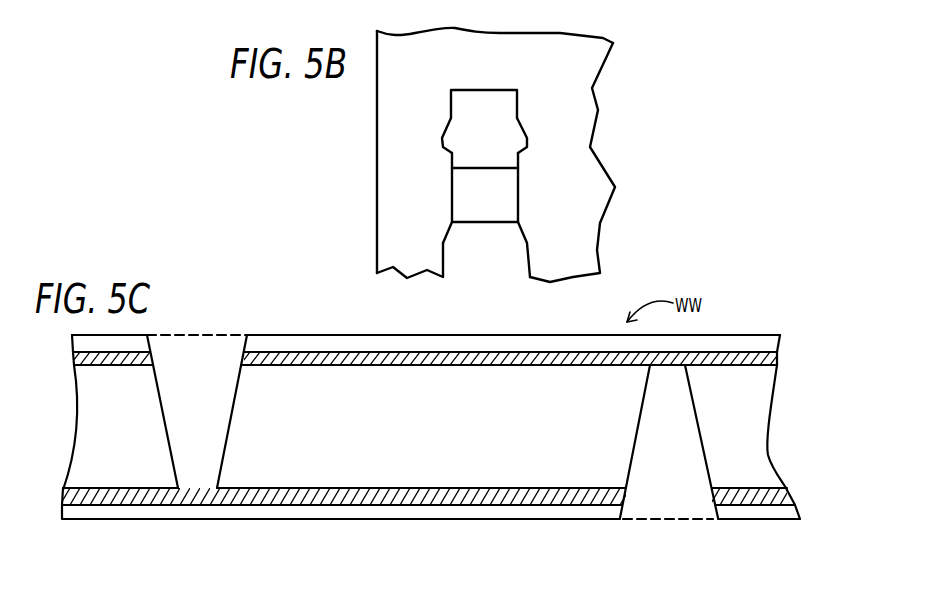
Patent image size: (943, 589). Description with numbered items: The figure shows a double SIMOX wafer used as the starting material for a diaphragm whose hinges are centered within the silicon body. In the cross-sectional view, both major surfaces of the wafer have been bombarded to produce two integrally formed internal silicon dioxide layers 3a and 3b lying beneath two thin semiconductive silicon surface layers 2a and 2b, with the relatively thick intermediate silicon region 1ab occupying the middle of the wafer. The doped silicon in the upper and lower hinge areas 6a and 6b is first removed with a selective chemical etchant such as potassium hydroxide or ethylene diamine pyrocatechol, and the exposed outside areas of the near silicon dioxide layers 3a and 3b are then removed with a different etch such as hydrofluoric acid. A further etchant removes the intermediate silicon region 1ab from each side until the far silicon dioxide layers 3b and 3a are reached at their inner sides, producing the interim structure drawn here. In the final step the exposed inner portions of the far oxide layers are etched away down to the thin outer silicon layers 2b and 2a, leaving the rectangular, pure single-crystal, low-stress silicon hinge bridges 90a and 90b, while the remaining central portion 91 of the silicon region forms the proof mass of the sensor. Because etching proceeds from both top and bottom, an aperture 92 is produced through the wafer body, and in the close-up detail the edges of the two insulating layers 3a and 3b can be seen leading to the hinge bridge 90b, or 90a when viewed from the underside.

In FIG. 5B, the silicon hinge bridge 90a is at (567, 32).
In FIG. 5B, the upper silicon surface layer 2a is at (493, 65).
In FIG. 5C, the upper silicon surface layer 2a is at (782, 342).
In FIG. 5B, the aperture 92 is at (442, 147).
In FIG. 5B, the lower silicon dioxide layer 3b is at (523, 143).
In FIG. 5C, the lower silicon dioxide layer 3b is at (787, 493).
In FIG. 5B, the lower silicon surface layer 2b is at (500, 208).
In FIG. 5C, the lower silicon surface layer 2b is at (800, 508).
In FIG. 5B, the silicon hinge bridge 90b is at (469, 226).
In FIG. 5B, the upper silicon dioxide layer 3a is at (450, 245).
In FIG. 5C, the upper silicon dioxide layer 3a is at (778, 357).
In FIG. 5B, the central portion 91 is at (575, 193).
In FIG. 5C, the intermediate silicon region 1ab is at (442, 440).
In FIG. 5C, the upper hinge area 6a is at (193, 375).
In FIG. 5C, the lower hinge area 6b is at (660, 472).